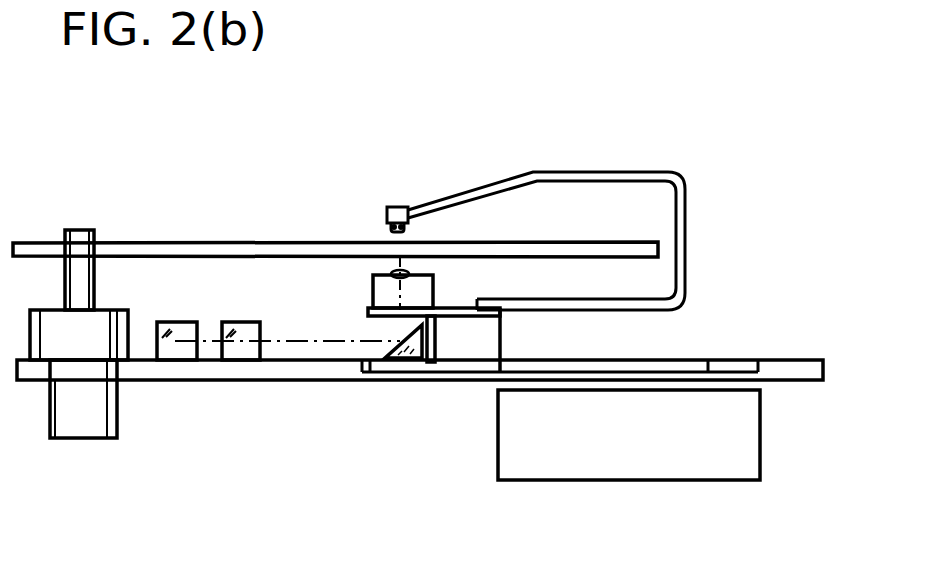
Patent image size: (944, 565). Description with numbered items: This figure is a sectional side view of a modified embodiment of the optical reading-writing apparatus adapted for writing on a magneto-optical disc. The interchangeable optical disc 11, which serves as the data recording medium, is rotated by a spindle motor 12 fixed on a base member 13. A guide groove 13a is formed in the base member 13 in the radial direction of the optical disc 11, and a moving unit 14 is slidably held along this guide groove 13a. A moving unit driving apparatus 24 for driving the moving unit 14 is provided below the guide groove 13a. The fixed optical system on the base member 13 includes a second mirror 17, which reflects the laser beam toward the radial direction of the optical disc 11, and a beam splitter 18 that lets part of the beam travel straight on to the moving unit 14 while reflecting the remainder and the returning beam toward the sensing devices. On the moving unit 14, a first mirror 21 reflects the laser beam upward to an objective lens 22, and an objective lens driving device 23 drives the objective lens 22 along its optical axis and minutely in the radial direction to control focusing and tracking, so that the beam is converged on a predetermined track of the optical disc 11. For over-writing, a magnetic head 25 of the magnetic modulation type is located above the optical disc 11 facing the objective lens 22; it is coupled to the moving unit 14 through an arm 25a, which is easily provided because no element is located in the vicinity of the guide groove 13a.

The optical disc 11 is at (146, 241).
The spindle motor 12 is at (88, 432).
The base member 13 is at (792, 361).
The guide groove 13a is at (708, 361).
The moving unit 14 is at (493, 333).
The second mirror 17 is at (178, 354).
The beam splitter 18 is at (242, 354).
The first mirror 21 is at (418, 356).
The objective lens 22 is at (392, 274).
The objective lens driving device 23 is at (420, 291).
The moving unit driving apparatus 24 is at (722, 473).
The magnetic head 25 is at (397, 206).
The arm 25a is at (599, 171).